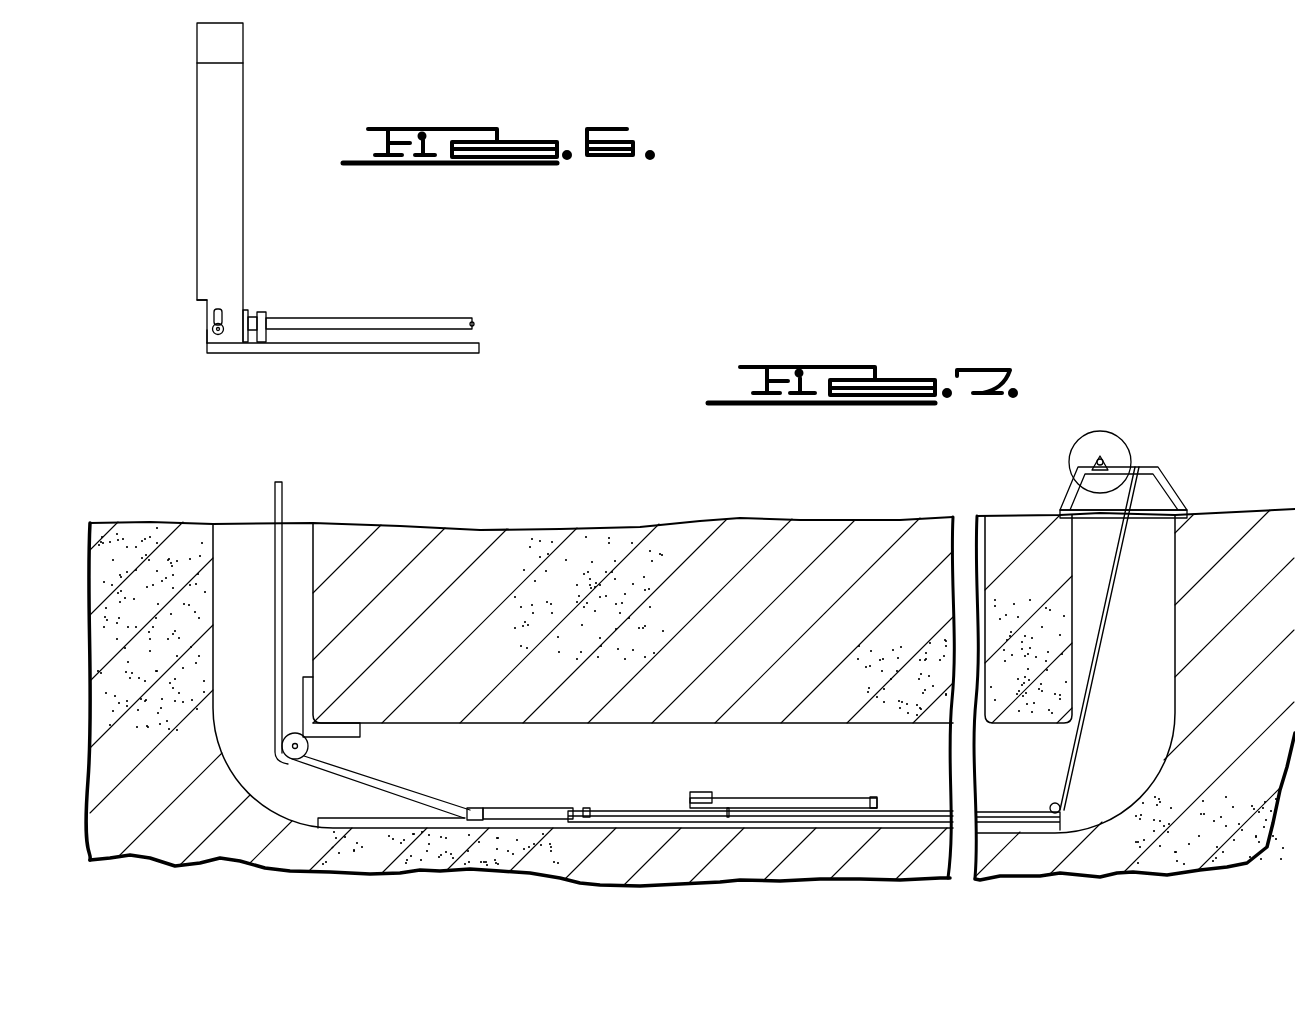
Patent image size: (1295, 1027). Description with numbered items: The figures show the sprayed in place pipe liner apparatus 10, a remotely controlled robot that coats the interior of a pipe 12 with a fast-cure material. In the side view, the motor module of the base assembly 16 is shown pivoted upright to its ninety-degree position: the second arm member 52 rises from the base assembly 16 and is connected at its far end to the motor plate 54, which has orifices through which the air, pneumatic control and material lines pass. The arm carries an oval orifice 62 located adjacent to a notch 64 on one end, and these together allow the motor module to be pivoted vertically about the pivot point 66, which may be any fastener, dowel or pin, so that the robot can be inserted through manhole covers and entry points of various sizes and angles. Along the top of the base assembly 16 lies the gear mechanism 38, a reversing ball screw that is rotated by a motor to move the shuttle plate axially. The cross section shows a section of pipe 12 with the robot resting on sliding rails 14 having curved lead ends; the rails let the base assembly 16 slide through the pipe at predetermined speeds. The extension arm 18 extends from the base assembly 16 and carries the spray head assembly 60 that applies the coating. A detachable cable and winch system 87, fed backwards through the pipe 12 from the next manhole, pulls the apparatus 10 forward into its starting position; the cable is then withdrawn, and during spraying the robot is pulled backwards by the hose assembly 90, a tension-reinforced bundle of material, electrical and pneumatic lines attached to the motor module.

In FIG. 7, the sprayed in place pipe liner apparatus 10 is at (719, 788).
In FIG. 7, the pipe 12 is at (311, 538).
In FIG. 7, the sliding rails 14 is at (330, 820).
In FIG. 6, the base assembly 16 is at (413, 351).
In FIG. 7, the base assembly 16 is at (634, 810).
In FIG. 7, the extension arm 18 is at (528, 808).
In FIG. 6, the gear mechanism 38 is at (373, 320).
In FIG. 6, the second arm member 52 is at (207, 128).
In FIG. 6, the motor plate 54 is at (207, 47).
In FIG. 7, the spray head assembly 60 is at (875, 797).
In FIG. 6, the oval orifice 62 is at (223, 312).
In FIG. 6, the notch 64 is at (205, 307).
In FIG. 6, the pivot point 66 is at (213, 335).
In FIG. 7, the cable and winch system 87 is at (1133, 442).
In FIG. 7, the hose assembly 90 is at (275, 612).